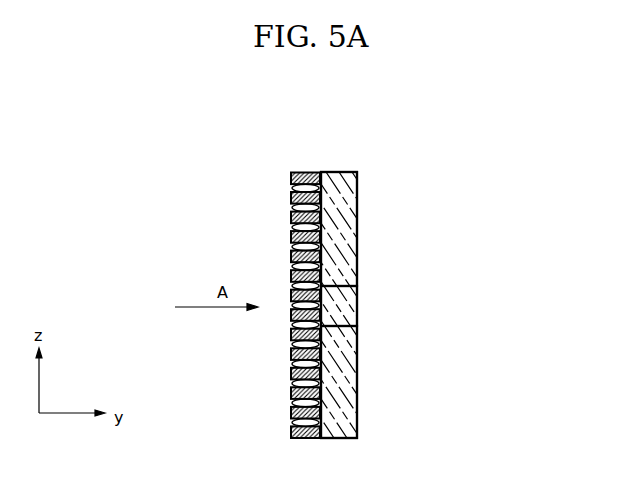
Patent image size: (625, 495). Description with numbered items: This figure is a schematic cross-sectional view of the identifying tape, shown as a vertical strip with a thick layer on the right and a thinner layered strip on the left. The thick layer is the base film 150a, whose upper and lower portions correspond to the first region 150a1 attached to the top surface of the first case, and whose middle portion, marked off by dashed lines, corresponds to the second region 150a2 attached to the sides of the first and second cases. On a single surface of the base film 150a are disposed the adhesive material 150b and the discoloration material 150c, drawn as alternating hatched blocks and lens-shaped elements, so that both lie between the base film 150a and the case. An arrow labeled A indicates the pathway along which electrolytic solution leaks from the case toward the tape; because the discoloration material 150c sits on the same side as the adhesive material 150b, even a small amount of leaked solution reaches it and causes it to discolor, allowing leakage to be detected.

The base film 150a is at (336, 305).
The first region 150a1 is at (353, 208).
The second region 150a2 is at (353, 303).
The adhesive material 150b is at (298, 171).
The discoloration material 150c is at (290, 189).